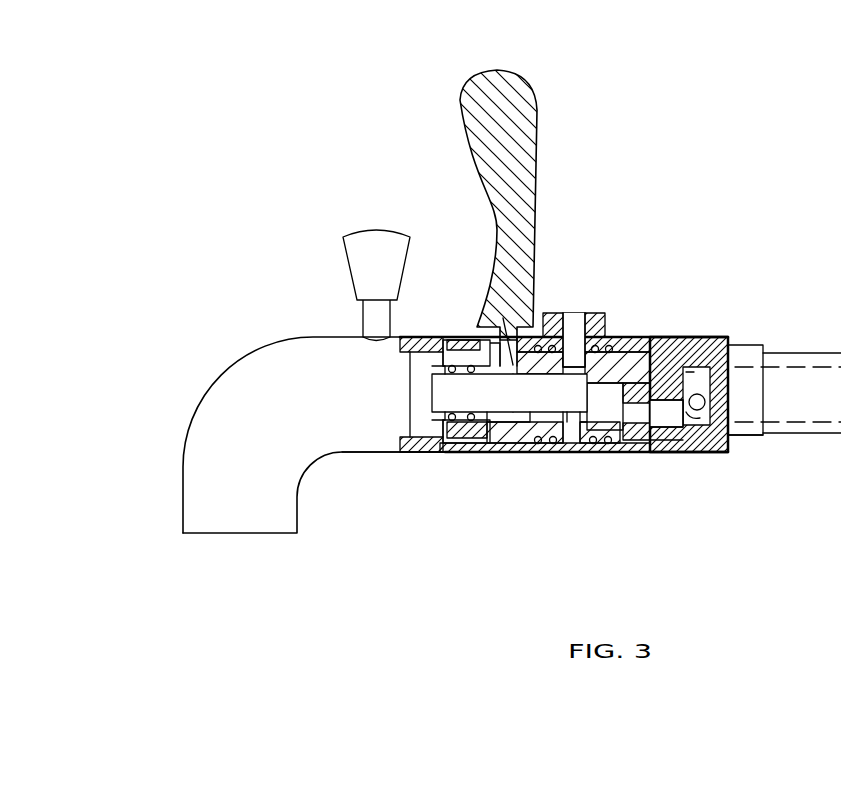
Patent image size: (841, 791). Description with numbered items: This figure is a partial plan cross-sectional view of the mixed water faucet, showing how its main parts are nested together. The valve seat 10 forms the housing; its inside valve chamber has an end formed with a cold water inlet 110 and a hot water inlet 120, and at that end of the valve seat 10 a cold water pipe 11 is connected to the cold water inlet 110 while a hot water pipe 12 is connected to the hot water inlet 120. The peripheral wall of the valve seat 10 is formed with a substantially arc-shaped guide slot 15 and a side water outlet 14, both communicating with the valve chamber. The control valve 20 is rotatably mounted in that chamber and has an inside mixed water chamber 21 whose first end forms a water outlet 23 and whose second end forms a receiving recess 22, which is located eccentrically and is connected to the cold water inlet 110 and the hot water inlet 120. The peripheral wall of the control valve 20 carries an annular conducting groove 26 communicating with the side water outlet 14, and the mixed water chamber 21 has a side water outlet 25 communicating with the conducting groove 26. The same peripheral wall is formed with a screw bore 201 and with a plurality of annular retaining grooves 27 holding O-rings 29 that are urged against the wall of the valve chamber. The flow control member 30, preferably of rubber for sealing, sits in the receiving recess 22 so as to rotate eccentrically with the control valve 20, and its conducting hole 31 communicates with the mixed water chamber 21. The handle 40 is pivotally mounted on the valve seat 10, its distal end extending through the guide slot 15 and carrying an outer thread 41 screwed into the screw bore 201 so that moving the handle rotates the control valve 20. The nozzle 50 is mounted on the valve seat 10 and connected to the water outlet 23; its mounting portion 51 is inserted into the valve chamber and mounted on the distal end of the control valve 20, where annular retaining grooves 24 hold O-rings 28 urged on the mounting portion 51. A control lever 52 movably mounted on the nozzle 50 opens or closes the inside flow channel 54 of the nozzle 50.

The valve seat 10 is at (747, 452).
The cold water pipe 11 is at (777, 347).
The hot water pipe 12 is at (784, 341).
The side water outlet 14 is at (578, 290).
The guide slot 15 is at (458, 356).
The control valve 20 is at (672, 340).
The mixed water chamber 21 is at (553, 390).
The receiving recess 22 is at (564, 453).
The water outlet 23 is at (410, 300).
The annular retaining grooves 24 is at (450, 276).
The side water outlet 25 is at (573, 460).
The annular conducting groove 26 is at (572, 343).
The annular retaining grooves 27 is at (552, 491).
The O-rings 28 is at (440, 362).
The O-rings 29 is at (533, 453).
The flow control member 30 is at (633, 453).
The conducting hole 31 is at (690, 427).
The handle 40 is at (452, 93).
The outer thread 41 is at (512, 418).
The nozzle 50 is at (210, 405).
The mounting portion 51 is at (463, 453).
The control lever 52 is at (352, 266).
The inside flow channel 54 is at (437, 400).
The cold water inlet 110 is at (693, 453).
The hot water inlet 120 is at (705, 490).
The screw bore 201 is at (493, 465).